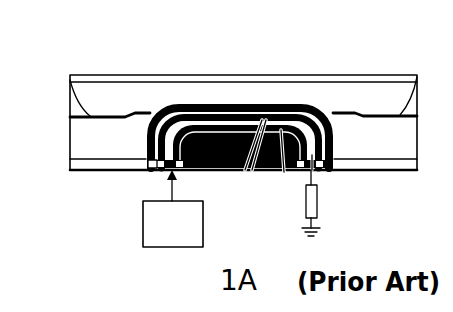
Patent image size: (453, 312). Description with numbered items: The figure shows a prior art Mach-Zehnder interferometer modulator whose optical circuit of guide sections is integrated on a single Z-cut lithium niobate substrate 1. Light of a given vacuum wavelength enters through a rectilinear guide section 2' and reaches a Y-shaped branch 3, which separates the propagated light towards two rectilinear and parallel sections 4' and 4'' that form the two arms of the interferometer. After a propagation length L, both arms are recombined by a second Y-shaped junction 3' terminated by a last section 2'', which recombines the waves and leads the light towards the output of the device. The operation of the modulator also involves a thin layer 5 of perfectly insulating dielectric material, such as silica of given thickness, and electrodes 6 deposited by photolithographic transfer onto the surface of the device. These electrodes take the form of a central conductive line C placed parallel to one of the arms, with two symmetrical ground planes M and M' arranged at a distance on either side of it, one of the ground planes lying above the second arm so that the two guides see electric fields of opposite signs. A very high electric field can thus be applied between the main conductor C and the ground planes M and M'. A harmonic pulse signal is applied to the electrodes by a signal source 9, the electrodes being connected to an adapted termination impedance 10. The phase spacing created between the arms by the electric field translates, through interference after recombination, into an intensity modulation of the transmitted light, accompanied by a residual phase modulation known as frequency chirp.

The lithium niobate substrate 1 is at (400, 164).
The rectilinear guide section 2' is at (60, 77).
The last section 2'' is at (426, 76).
The Y-shaped branch 3 is at (239, 162).
The second Y-shaped junction 3' is at (388, 66).
The rectilinear parallel section 4' is at (345, 61).
The rectilinear parallel section 4'' is at (361, 71).
The thin layer of insulating dielectric material 5 is at (68, 143).
The electrodes 6 is at (256, 170).
The signal source 9 is at (142, 233).
The adapted termination impedance 10 is at (305, 212).
The conductive line C is at (158, 167).
The ground plane M is at (272, 176).
The ground plane M' is at (340, 187).
The propagation length L is at (283, 51).